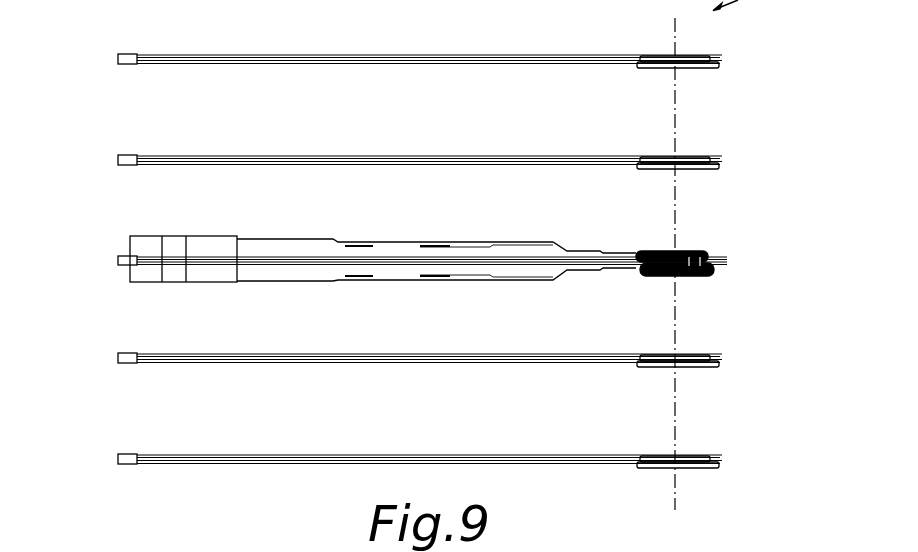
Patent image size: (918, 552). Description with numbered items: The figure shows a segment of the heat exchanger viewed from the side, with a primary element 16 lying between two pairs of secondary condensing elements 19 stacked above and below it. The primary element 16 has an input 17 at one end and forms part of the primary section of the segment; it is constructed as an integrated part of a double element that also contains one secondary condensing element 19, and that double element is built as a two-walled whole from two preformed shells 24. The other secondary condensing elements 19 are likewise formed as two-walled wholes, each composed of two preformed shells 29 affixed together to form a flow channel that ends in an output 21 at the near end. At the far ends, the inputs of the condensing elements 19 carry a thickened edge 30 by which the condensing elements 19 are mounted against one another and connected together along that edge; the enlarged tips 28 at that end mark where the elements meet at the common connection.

The primary element 16 is at (385, 262).
The input 17 is at (140, 247).
The secondary condensing element 19 is at (412, 55).
The output 21 is at (118, 59).
The preformed shell 24 is at (243, 248).
The distal tips 28 is at (722, 62).
The preformed shell 29 is at (294, 55).
The thickened edge 30 is at (695, 67).